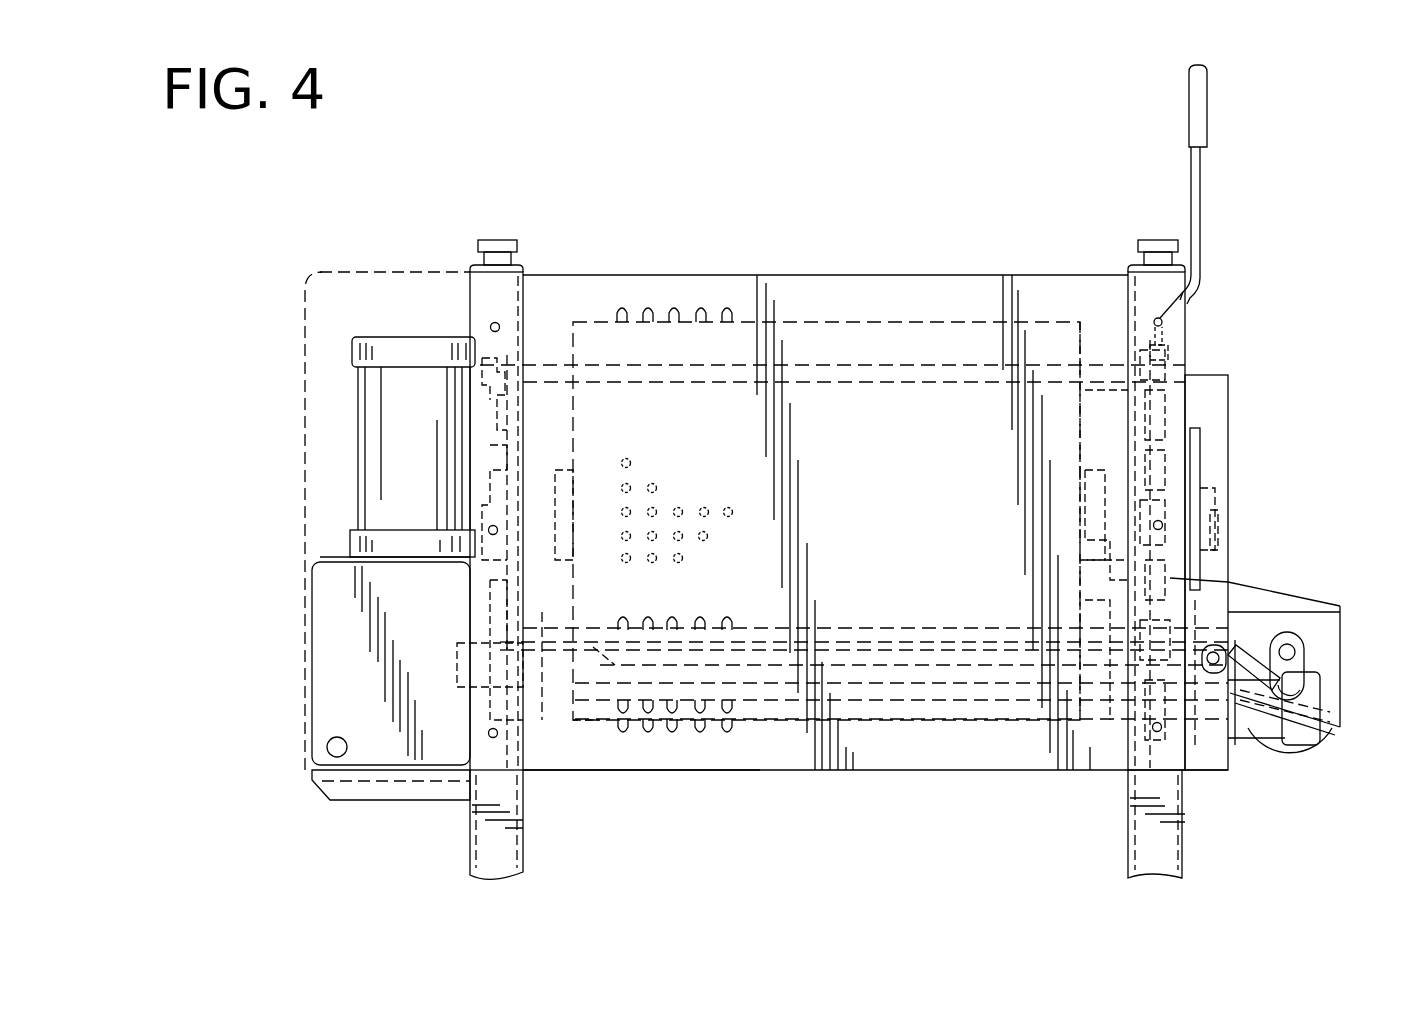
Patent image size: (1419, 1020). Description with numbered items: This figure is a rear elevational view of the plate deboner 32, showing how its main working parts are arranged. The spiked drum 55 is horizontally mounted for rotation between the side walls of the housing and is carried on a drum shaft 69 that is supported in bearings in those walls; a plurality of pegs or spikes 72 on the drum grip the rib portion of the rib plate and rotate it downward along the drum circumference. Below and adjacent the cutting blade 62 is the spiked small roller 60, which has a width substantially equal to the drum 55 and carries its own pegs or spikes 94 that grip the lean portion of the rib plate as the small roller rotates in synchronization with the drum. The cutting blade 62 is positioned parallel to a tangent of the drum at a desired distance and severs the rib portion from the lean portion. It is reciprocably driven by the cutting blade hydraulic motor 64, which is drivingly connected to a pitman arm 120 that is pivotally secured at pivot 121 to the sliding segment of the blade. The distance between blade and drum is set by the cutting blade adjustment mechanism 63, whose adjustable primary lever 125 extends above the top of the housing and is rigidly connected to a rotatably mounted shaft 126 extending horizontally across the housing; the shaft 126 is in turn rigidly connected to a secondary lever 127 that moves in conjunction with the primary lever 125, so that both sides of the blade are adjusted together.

The plate deboner 32 is at (250, 447).
The spiked drum 55 is at (928, 320).
The spiked small roller 60 is at (598, 721).
The cutting blade 62 is at (460, 669).
The cutting blade adjustment mechanism 63 is at (1215, 282).
The cutting blade hydraulic motor 64 is at (1285, 753).
The drum shaft 69 is at (1102, 516).
The pegs or spikes 72 is at (703, 316).
The pegs or spikes 94 is at (645, 623).
The pitman arm 120 is at (1255, 661).
The pivot 121 is at (1222, 649).
The primary lever 125 is at (1200, 100).
The shaft 126 is at (1098, 373).
The secondary lever 127 is at (497, 398).